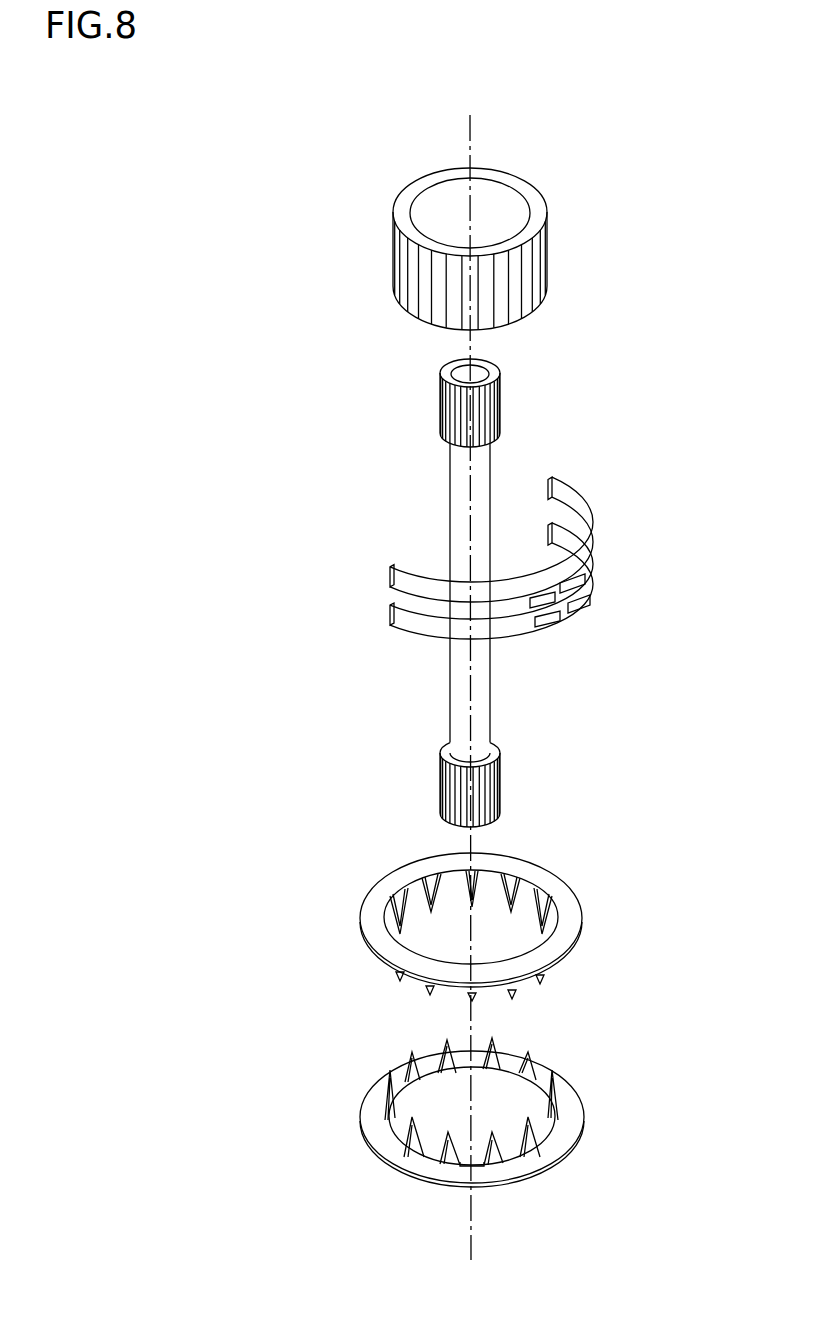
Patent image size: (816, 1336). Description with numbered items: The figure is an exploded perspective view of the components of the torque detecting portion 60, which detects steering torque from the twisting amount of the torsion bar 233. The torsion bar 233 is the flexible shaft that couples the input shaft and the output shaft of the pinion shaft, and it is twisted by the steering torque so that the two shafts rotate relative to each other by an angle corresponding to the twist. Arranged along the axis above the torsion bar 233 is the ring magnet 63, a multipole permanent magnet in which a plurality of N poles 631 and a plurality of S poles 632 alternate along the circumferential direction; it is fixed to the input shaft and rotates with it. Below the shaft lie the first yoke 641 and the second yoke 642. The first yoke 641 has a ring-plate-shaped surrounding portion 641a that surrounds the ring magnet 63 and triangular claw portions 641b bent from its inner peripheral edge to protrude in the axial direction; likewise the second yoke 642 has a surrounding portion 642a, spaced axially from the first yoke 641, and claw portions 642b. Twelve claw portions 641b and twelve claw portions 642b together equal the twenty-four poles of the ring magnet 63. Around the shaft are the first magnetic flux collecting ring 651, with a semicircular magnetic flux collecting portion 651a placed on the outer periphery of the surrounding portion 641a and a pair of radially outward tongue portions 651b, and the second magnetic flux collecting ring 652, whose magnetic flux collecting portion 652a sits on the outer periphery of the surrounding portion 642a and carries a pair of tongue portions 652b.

The torque detecting portion 60 is at (383, 161).
The ring magnet 63 is at (523, 182).
The N poles 631 is at (458, 312).
The S poles 632 is at (482, 310).
The torsion bar 233 is at (490, 712).
The first magnetic flux collecting ring 651 is at (386, 560).
The magnetic flux collecting portion 651a is at (567, 480).
The tongue portions 651b is at (575, 578).
The second magnetic flux collecting ring 652 is at (385, 601).
The magnetic flux collecting portion 652a is at (400, 632).
The tongue portions 652b is at (553, 621).
The first yoke 641 is at (373, 871).
The surrounding portion 641a is at (571, 904).
The claw portions 641b is at (474, 885).
The second yoke 642 is at (373, 1063).
The surrounding portion 642a is at (573, 1115).
The claw portions 642b is at (498, 1048).